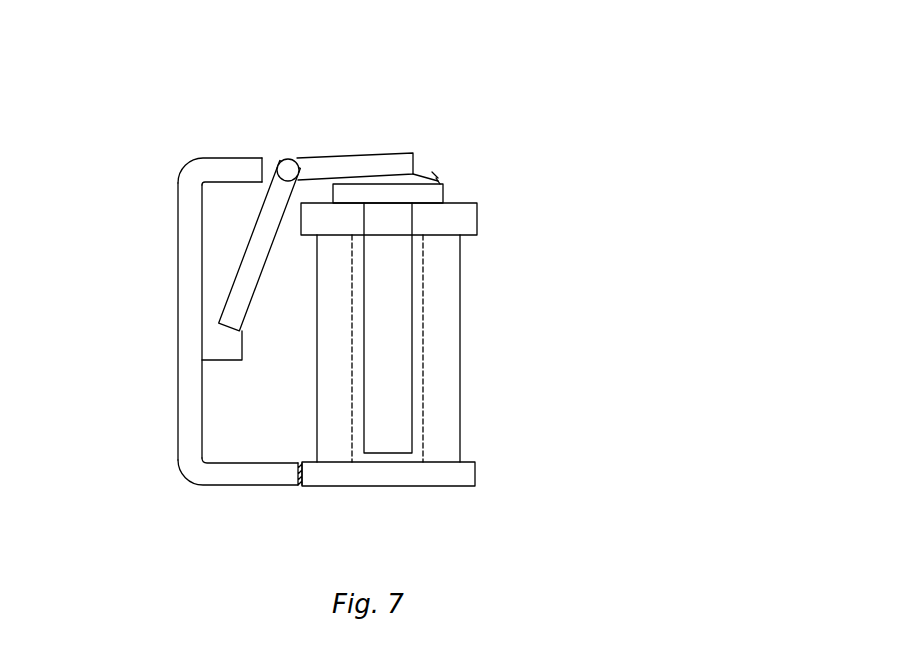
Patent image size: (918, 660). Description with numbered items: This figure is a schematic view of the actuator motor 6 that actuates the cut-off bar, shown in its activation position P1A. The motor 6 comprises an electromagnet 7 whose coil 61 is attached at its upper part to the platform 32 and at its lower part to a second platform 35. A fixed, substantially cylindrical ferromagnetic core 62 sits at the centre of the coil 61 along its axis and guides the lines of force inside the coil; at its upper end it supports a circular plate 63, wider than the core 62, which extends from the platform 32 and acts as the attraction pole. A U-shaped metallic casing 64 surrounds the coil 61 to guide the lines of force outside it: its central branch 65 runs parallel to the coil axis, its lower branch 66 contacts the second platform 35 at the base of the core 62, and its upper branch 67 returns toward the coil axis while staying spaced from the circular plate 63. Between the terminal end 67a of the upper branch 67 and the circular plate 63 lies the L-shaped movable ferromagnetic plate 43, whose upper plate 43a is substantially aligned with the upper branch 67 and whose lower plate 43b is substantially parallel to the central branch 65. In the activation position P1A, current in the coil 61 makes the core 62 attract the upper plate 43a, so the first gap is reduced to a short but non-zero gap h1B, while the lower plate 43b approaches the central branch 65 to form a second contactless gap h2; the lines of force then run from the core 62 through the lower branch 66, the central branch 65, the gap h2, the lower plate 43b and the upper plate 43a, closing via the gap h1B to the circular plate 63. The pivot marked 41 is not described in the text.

The actuator motor 6 is at (148, 178).
The electromagnet 7 is at (528, 428).
The platform 32 is at (460, 220).
The second platform 35 is at (476, 470).
The pivot axis 41 is at (292, 158).
The L-shaped movable ferromagnetic plate 43 is at (365, 127).
The upper plate 43a is at (383, 162).
The lower plate 43b is at (243, 293).
The coil 61 is at (440, 390).
The ferromagnetic core 62 is at (395, 338).
The circular plate 63 is at (432, 193).
The metallic casing 64 is at (158, 328).
The central branch 65 is at (185, 362).
The lower branch 66 is at (258, 473).
The upper branch 67 is at (232, 158).
The terminal end 67a is at (267, 138).
The reduced first gap h1B is at (435, 174).
The second contactless gap h2 is at (222, 362).
The activation position P1A is at (430, 110).